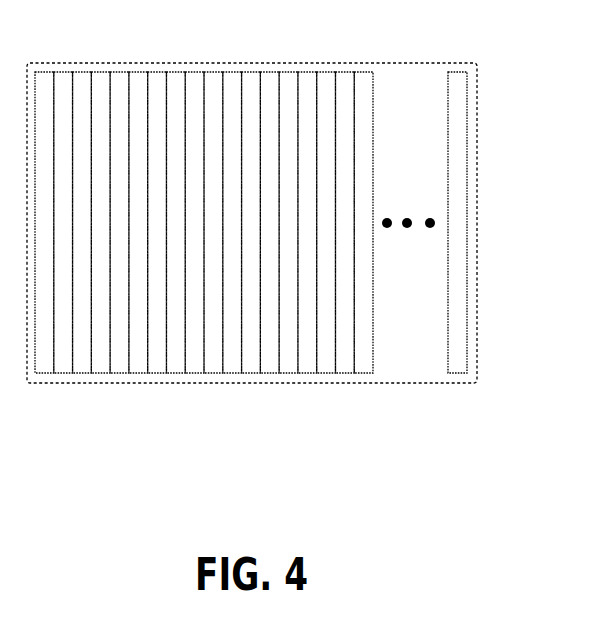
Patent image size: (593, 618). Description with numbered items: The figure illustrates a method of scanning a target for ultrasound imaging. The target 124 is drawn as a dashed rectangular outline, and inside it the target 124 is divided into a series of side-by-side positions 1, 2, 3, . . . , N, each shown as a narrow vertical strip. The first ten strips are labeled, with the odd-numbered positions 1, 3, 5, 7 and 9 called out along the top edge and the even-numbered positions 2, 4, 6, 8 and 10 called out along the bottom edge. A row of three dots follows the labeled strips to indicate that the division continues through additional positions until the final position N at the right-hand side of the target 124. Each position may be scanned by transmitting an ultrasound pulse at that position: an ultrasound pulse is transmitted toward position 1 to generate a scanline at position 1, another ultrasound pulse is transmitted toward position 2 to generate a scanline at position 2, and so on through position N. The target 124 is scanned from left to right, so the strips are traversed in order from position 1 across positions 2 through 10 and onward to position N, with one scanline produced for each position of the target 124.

The position 1 is at (44, 72).
The position 2 is at (63, 373).
The position 3 is at (82, 72).
The position 4 is at (101, 373).
The position 5 is at (120, 72).
The position 6 is at (138, 373).
The position 7 is at (157, 72).
The position 8 is at (176, 373).
The position 9 is at (195, 72).
The position 10 is at (213, 373).
The position N is at (458, 72).
The target 124 is at (478, 128).